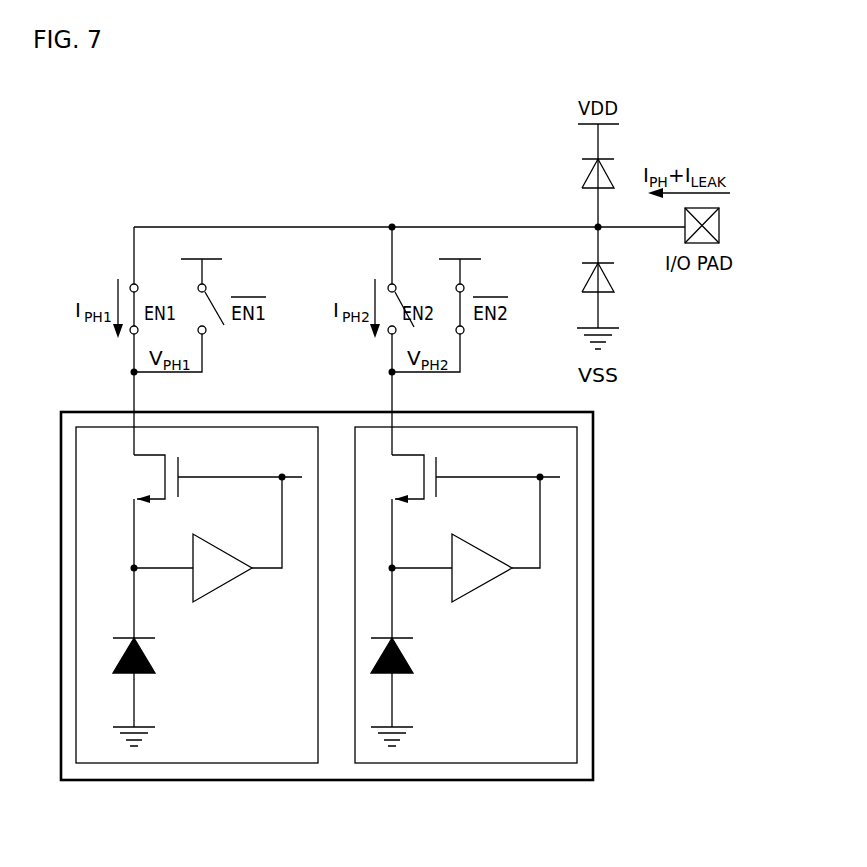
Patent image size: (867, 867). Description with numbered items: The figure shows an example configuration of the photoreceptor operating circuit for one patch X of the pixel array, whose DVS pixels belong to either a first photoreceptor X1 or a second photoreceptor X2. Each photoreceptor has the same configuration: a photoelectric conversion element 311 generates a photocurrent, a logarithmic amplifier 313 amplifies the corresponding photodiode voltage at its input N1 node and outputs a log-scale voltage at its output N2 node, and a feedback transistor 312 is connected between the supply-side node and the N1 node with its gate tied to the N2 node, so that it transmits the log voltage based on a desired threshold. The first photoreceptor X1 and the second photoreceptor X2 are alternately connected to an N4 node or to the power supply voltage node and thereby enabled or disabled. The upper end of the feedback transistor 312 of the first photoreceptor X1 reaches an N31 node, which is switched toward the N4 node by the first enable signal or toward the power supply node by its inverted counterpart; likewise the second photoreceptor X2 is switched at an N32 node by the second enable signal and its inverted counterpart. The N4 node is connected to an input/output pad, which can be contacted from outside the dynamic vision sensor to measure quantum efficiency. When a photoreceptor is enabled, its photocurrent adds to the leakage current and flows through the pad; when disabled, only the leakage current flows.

The N4 node N4 is at (392, 227).
The N31 node N31 is at (134, 372).
The N32 node N32 is at (392, 372).
The patch X is at (121, 783).
The first photoreceptor X1 is at (197, 596).
The second photoreceptor X2 is at (465, 763).
The photoelectric conversion element 311 is at (150, 660).
The feedback transistor 312 is at (152, 479).
The logarithmic amplifier 313 is at (223, 587).
The N1 node N1 is at (134, 568).
The N2 node N2 is at (282, 478).